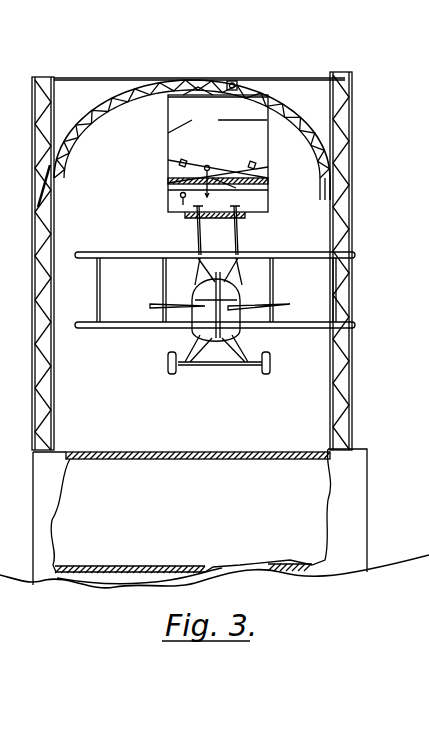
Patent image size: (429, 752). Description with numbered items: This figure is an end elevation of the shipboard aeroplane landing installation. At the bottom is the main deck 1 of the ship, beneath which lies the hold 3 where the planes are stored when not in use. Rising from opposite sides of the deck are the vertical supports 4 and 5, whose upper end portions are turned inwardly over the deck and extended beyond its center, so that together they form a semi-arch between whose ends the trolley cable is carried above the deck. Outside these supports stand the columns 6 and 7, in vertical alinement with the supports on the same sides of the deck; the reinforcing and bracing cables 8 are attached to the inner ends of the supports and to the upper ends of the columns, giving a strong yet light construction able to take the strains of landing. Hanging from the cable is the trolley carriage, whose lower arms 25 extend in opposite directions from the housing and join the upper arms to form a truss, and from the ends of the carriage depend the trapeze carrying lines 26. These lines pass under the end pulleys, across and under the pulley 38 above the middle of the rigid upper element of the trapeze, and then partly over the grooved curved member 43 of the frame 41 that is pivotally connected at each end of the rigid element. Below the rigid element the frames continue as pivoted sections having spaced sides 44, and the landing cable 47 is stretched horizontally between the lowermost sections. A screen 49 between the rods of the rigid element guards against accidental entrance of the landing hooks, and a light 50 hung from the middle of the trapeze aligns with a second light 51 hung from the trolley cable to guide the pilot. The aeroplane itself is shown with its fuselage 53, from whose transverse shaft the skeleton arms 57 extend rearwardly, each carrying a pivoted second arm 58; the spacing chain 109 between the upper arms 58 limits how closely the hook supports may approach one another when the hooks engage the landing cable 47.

The main deck 1 is at (150, 455).
The hold 3 is at (173, 493).
The vertical support 4 is at (62, 177).
The vertical support 5 is at (332, 195).
The column 6 is at (33, 168).
The column 7 is at (340, 150).
The reinforcing and bracing cables 8 is at (125, 80).
The arms 25 is at (187, 98).
The trapeze carrying lines 26 is at (217, 125).
The pulley 38 is at (210, 165).
The frame 41 is at (168, 167).
The curved frame member 43 is at (183, 160).
The sides 44 is at (170, 202).
The landing cable 47 is at (253, 212).
The screen 49 is at (268, 187).
The light 50 is at (220, 190).
The light 51 is at (182, 198).
The aeroplane fuselage 53 is at (210, 332).
The skeleton arm 57 is at (198, 264).
The second arm 58 is at (197, 212).
The spacing chain 109 is at (212, 218).